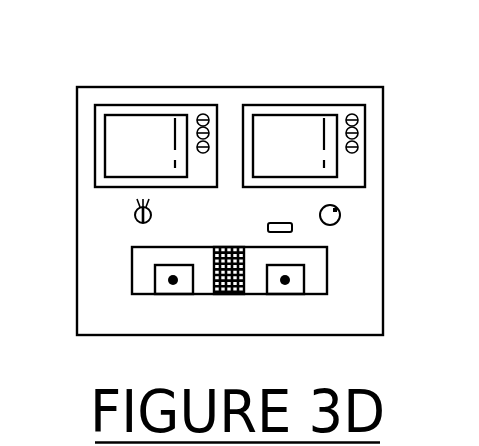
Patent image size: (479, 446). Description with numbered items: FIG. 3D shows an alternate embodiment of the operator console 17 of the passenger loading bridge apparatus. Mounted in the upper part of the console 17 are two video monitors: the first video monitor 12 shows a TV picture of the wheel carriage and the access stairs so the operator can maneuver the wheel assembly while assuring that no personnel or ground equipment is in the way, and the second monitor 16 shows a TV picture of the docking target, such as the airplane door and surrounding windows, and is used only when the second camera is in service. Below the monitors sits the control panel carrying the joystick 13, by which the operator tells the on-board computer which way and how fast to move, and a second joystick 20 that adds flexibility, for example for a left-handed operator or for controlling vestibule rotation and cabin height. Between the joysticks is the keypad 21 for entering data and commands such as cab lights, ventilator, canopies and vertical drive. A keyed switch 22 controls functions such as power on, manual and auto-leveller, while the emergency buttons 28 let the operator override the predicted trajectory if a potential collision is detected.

The first video monitor 12 is at (142, 148).
The joystick 13 is at (285, 282).
The second monitor 16 is at (292, 148).
The console 17 is at (333, 87).
The second joystick 20 is at (173, 282).
The keypad 21 is at (233, 294).
The keyed switch 22 is at (136, 223).
The emergency buttons 28 is at (338, 224).